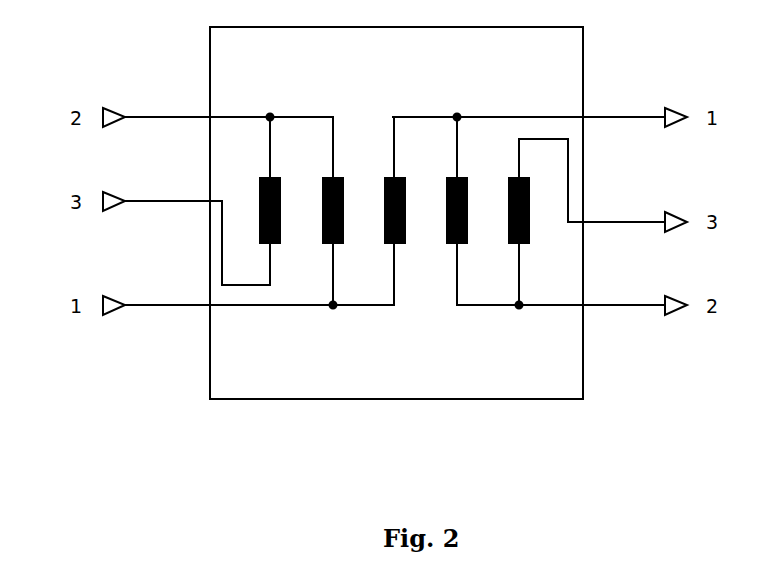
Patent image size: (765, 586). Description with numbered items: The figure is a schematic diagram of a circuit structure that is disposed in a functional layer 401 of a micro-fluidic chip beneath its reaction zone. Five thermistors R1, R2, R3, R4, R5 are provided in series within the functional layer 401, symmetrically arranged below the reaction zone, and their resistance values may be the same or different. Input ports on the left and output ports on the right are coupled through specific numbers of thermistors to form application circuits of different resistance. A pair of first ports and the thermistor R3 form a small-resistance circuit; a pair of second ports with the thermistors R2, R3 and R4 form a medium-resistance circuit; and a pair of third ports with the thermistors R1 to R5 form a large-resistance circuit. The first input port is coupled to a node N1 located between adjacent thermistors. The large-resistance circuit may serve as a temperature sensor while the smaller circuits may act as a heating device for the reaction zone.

The functional layer 401 is at (583, 27).
The thermistor R1 is at (258, 201).
The thermistor R2 is at (320, 211).
The thermistor R3 is at (383, 211).
The thermistor R4 is at (443, 211).
The thermistor R5 is at (508, 222).
The node N1 is at (327, 317).